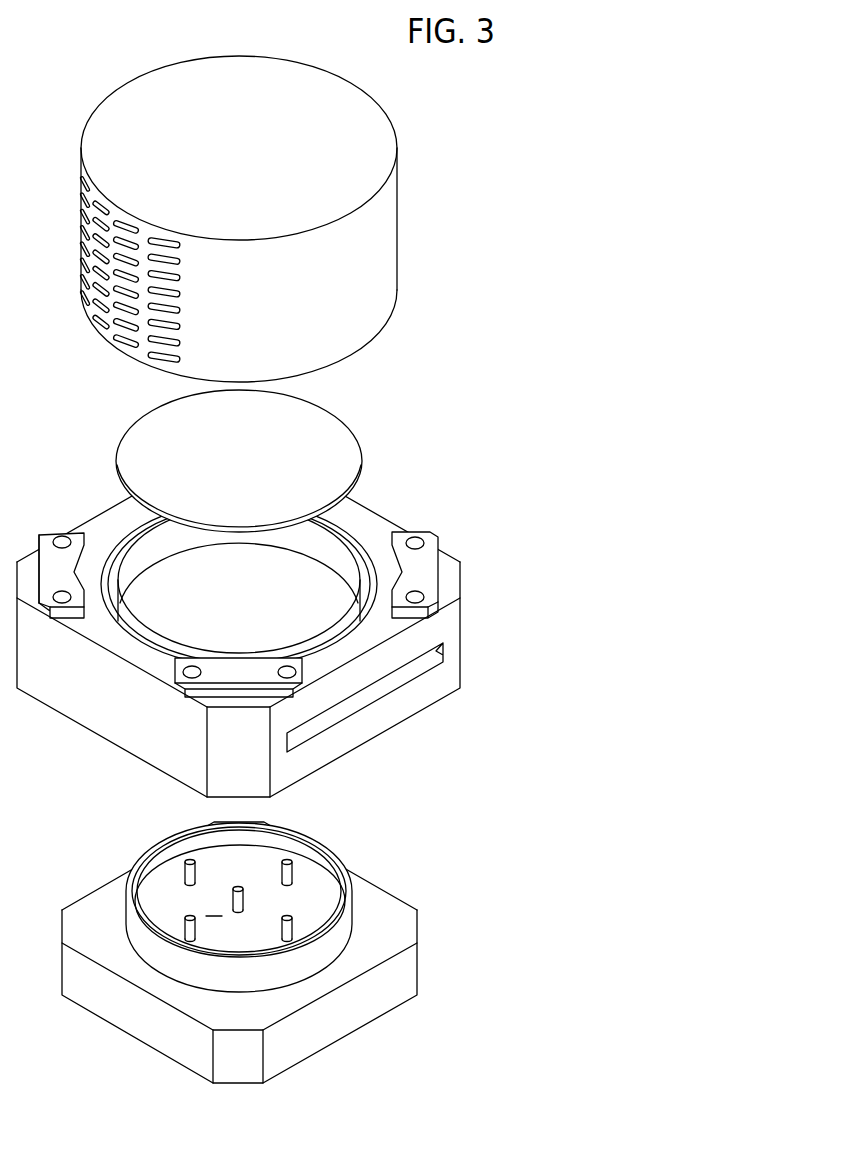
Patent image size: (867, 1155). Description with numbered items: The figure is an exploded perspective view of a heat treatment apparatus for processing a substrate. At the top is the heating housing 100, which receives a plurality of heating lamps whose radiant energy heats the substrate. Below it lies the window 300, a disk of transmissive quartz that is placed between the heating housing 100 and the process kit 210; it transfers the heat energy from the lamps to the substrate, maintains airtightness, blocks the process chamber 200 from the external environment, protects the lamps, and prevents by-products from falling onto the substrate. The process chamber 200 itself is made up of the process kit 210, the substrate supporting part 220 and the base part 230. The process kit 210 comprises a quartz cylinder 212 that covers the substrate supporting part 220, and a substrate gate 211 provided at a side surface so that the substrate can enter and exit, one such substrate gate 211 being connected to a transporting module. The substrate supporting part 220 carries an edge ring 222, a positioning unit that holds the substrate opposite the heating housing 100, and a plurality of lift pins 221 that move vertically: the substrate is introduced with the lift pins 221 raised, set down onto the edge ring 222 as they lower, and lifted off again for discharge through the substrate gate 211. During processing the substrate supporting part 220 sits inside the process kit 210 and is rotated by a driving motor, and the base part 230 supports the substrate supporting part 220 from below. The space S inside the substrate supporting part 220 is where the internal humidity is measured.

The heating housing 100 is at (397, 231).
The window 300 is at (363, 463).
The process chamber 200 is at (500, 733).
The process kit 210 is at (272, 625).
The substrate gate 211 is at (337, 712).
The quartz cylinder 212 is at (460, 625).
The substrate supporting part 220 is at (304, 905).
The lift pins 221 is at (290, 917).
The edge ring 222 is at (330, 847).
The base part 230 is at (405, 983).